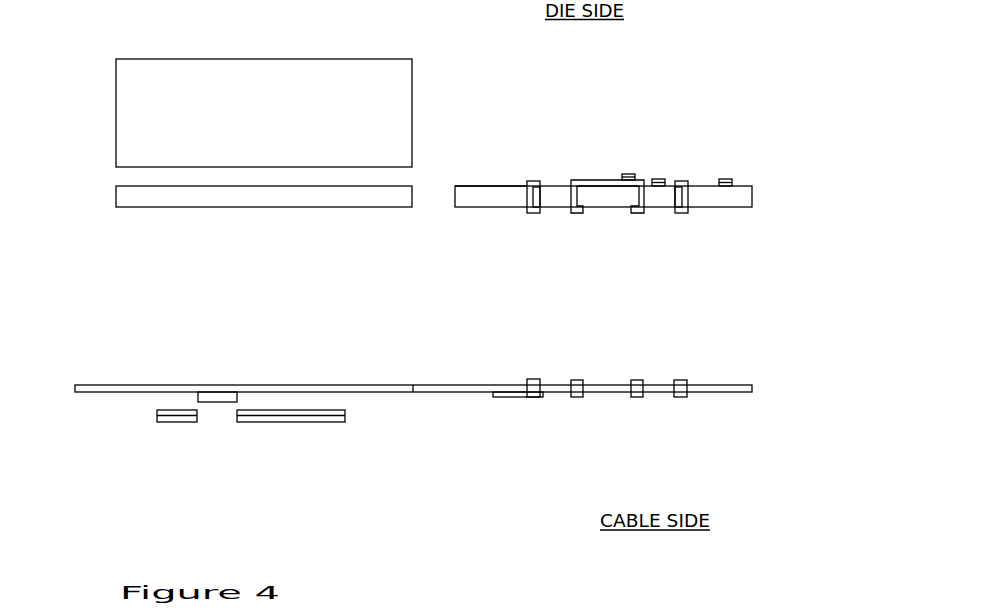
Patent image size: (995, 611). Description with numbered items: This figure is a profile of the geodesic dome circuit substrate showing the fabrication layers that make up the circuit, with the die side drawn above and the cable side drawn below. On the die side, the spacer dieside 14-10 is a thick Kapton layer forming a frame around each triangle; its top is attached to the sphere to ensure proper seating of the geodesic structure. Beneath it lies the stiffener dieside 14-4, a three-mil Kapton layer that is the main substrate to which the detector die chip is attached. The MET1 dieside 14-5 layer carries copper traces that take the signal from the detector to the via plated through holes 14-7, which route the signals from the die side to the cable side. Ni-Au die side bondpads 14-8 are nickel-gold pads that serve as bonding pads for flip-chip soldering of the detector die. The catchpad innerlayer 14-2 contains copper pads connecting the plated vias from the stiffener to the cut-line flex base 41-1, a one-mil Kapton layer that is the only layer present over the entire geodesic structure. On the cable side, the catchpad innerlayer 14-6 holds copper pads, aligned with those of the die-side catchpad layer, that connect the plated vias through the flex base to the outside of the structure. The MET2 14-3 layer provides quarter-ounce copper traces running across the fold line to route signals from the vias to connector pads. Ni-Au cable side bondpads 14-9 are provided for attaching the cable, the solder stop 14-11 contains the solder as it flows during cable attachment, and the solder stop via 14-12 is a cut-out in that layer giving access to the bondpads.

The spacer dieside 14-10 is at (264, 113).
The stiffener dieside 14-4 is at (150, 200).
The MET1 dieside 14-5 is at (531, 183).
The via plated through holes 14-7 is at (650, 193).
The Ni-Au die side bondpads 14-8 is at (629, 176).
The catchpad innerlayer 14-2 is at (675, 212).
The cut-line flex base 41-1 is at (132, 391).
The catchpad innerlayer 14-6 is at (678, 381).
The MET2 14-3 is at (493, 394).
The solder stop via 14-12 is at (217, 413).
The Ni-Au cable side bondpads 14-9 is at (198, 400).
The solder stop 14-11 is at (272, 417).